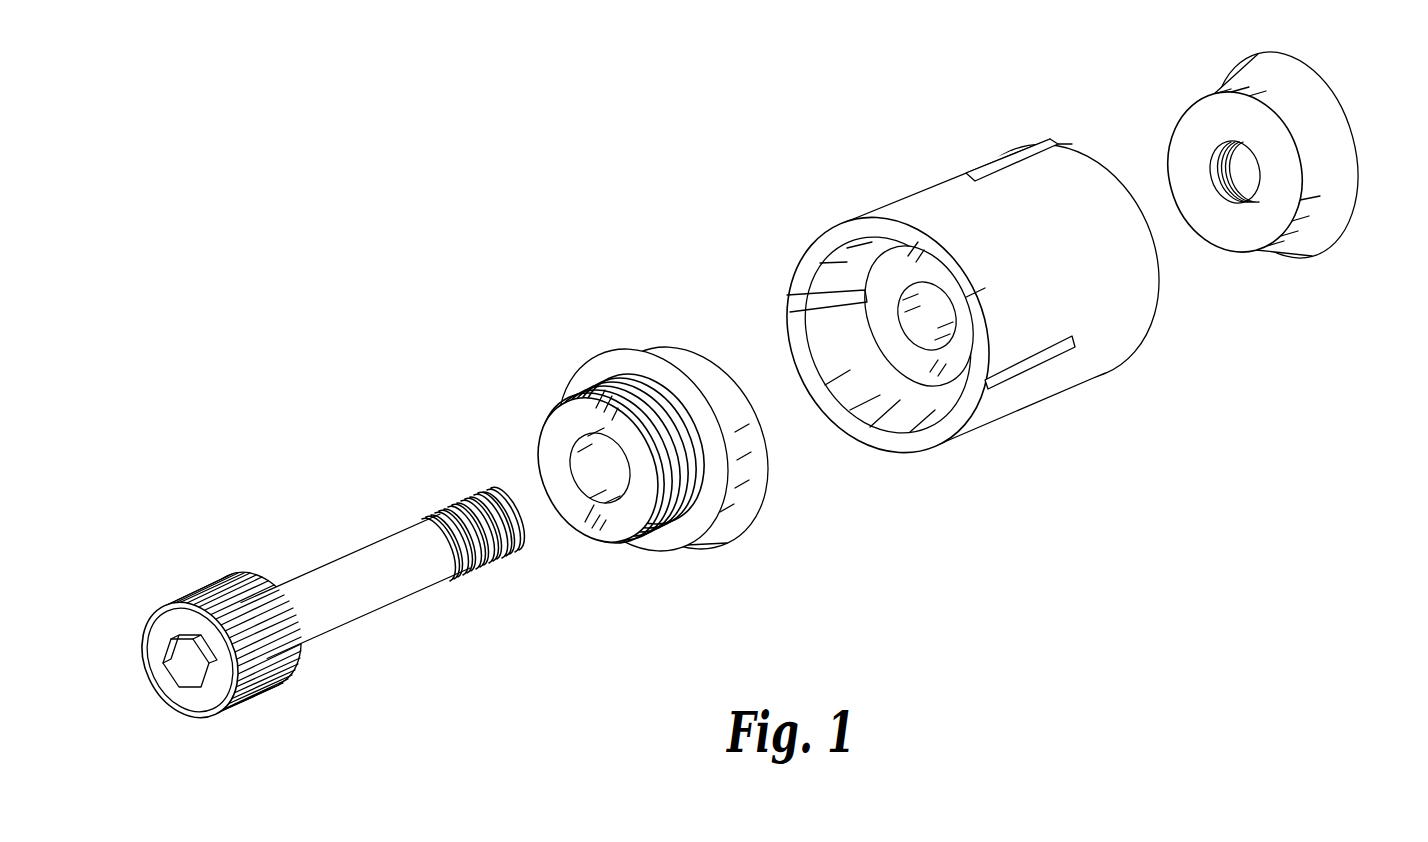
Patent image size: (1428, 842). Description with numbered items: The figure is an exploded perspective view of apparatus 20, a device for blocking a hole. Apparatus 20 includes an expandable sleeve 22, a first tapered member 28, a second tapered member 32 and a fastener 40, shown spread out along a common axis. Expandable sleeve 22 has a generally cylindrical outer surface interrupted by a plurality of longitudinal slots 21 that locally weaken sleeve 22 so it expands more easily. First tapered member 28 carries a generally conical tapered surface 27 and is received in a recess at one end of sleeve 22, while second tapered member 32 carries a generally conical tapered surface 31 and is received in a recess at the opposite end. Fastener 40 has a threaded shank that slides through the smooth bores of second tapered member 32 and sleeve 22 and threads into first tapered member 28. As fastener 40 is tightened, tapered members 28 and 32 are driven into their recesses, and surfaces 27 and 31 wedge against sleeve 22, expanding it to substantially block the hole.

The apparatus 20 is at (862, 286).
The longitudinal slots 21 is at (788, 300).
The expandable sleeve 22 is at (1038, 378).
The tapered surface 27 is at (1273, 170).
The first tapered member 28 is at (1270, 212).
The tapered surface 31 is at (702, 352).
The second tapered member 32 is at (688, 524).
The fastener 40 is at (357, 596).